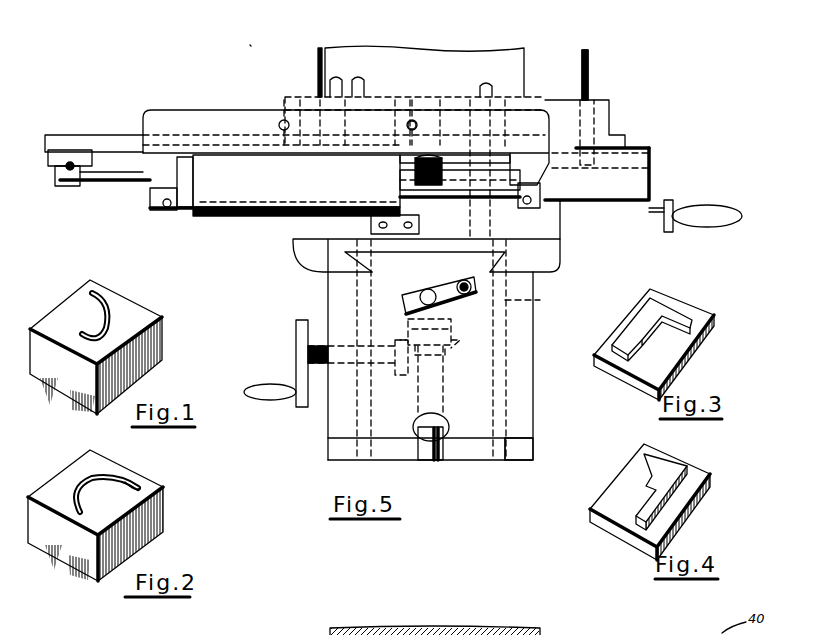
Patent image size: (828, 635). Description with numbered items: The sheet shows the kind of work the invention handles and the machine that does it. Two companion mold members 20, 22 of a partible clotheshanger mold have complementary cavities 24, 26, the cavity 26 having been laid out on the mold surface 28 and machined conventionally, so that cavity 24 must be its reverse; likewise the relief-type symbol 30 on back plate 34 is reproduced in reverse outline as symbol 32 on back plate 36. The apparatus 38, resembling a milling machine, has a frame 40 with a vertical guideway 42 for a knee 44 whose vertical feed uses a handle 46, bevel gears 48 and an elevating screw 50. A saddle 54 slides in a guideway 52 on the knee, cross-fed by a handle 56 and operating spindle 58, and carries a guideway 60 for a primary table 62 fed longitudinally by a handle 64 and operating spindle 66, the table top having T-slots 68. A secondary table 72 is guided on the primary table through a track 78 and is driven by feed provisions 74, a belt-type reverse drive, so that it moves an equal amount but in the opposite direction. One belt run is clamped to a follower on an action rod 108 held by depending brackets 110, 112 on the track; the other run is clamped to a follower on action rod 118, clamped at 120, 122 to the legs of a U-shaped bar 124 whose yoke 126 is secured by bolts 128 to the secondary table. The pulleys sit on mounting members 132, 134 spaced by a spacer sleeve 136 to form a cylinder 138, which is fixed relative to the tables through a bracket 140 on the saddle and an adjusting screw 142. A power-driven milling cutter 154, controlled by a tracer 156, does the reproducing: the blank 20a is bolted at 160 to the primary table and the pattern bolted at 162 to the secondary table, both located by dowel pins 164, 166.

In FIG. 1, the mold member 20 is at (149, 301).
In FIG. 5, the blank 20a is at (620, 106).
In FIG. 5, the mold member 22 is at (418, 95).
In FIG. 2, the mold member 22 is at (144, 471).
In FIG. 1, the cavity 24 is at (108, 302).
In FIG. 5, the cavity 26 is at (340, 78).
In FIG. 2, the cavity 26 is at (140, 490).
In FIG. 2, the mold surface 28 is at (84, 465).
In FIG. 3, the symbol 30 is at (660, 310).
In FIG. 4, the symbol 32 is at (666, 468).
In FIG. 3, the back plate 34 is at (698, 316).
In FIG. 4, the back plate 36 is at (696, 474).
In FIG. 5, the apparatus 38 is at (252, 38).
In FIG. 5, the frame 40 is at (533, 453).
In FIG. 5, the vertical guideway 42 is at (540, 308).
In FIG. 5, the knee 44 is at (528, 353).
In FIG. 5, the handle 46 is at (296, 385).
In FIG. 5, the bevel gears 48 is at (405, 340).
In FIG. 5, the elevating screw 50 is at (422, 448).
In FIG. 5, the guideway 52 is at (356, 258).
In FIG. 5, the saddle 54 is at (310, 269).
In FIG. 5, the handle 56 is at (450, 298).
In FIG. 5, the operating spindle 58 is at (438, 290).
In FIG. 5, the guideway 60 is at (562, 250).
In FIG. 5, the primary table 62 is at (650, 154).
In FIG. 5, the handle 64 is at (690, 206).
In FIG. 5, the operating spindle 66 is at (667, 200).
In FIG. 5, the T-slots 68 is at (622, 150).
In FIG. 5, the secondary table 72 is at (283, 118).
In FIG. 5, the feed provisions 74 is at (181, 222).
In FIG. 5, the track 78 is at (118, 140).
In FIG. 5, the action rod 108 is at (122, 182).
In FIG. 5, the depending bracket 110 is at (68, 182).
In FIG. 5, the depending bracket 112 is at (434, 168).
In FIG. 5, the action rod 118 is at (474, 198).
In FIG. 5, the clamp 120 is at (148, 216).
In FIG. 5, the clamp 122 is at (540, 200).
In FIG. 5, the U-shaped bar 124 is at (176, 106).
In FIG. 5, the yoke 126 is at (250, 108).
In FIG. 5, the bolts 128 is at (417, 122).
In FIG. 5, the mounting member 132 is at (190, 212).
In FIG. 5, the mounting member 134 is at (405, 183).
In FIG. 5, the spacer sleeve 136 is at (312, 192).
In FIG. 5, the cylinder 138 is at (262, 218).
In FIG. 5, the bracket 140 is at (424, 222).
In FIG. 5, the adjusting screw 142 is at (446, 190).
In FIG. 5, the milling cutter 154 is at (588, 96).
In FIG. 5, the tracer 156 is at (317, 90).
In FIG. 5, the bolts 160 is at (628, 70).
In FIG. 5, the bolts 162 is at (416, 96).
In FIG. 5, the dowel pin 164 is at (580, 94).
In FIG. 5, the dowel pin 166 is at (364, 88).